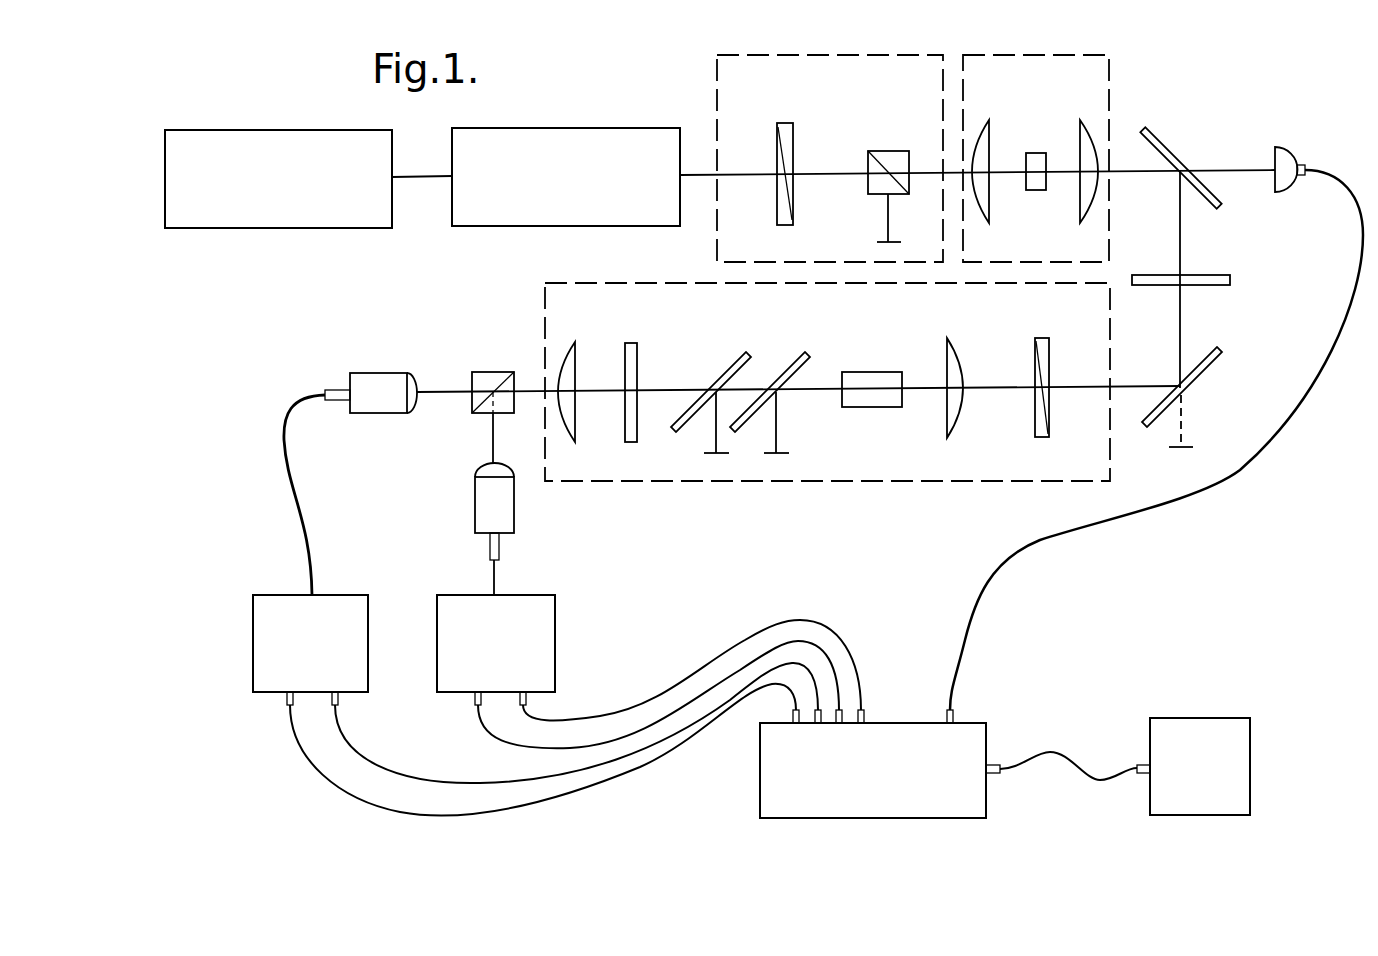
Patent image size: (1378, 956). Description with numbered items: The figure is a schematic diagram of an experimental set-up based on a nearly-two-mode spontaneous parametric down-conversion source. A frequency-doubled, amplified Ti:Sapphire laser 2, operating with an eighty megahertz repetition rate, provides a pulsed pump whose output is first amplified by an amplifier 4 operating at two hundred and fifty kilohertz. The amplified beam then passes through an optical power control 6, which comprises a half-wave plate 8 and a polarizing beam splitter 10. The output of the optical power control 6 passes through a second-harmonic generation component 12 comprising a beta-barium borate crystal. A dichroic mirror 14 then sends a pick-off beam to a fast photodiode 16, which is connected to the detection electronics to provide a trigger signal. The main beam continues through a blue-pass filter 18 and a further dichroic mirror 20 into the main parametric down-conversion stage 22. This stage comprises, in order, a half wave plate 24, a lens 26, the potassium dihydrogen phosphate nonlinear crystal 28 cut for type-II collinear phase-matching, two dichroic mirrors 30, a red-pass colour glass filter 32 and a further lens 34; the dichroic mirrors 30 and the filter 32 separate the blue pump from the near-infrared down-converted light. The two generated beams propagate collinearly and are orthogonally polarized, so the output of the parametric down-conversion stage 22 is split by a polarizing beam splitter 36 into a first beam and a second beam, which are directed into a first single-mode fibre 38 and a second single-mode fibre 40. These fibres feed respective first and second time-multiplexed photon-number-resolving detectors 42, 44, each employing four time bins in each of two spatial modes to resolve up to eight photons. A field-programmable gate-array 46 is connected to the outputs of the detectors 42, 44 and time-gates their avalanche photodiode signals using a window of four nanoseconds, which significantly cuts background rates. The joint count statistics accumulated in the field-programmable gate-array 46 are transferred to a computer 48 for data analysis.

The Ti:Sapphire laser 2 is at (273, 188).
The amplifier 4 is at (557, 188).
The optical power control 6 is at (827, 93).
The half-wave plate 8 is at (784, 123).
The polarizing beam splitter 10 is at (897, 151).
The second-harmonic generation component 12 is at (1020, 93).
The dichroic mirror 14 is at (1167, 143).
The fast photodiode 16 is at (1292, 148).
The blue-pass filter 18 is at (1200, 275).
The dichroic mirror 20 is at (1212, 366).
The parametric down-conversion stage 22 is at (817, 318).
The half wave plate 24 is at (1042, 338).
The lens 26 is at (960, 365).
The potassium dihydrogen phosphate nonlinear crystal 28 is at (870, 408).
The dichroic mirrors 30 is at (788, 362).
The red-pass colour glass filter 32 is at (637, 358).
The lens 34 is at (577, 358).
The polarizing beam splitter 36 is at (488, 372).
The first single-mode fibre 38 is at (294, 493).
The second single-mode fibre 40 is at (494, 578).
The first time-multiplexed photon-number-resolving detector 42 is at (295, 657).
The second time-multiplexed photon-number-resolving detector 44 is at (480, 657).
The field-programmable gate-array 46 is at (857, 783).
The computer 48 is at (1185, 780).